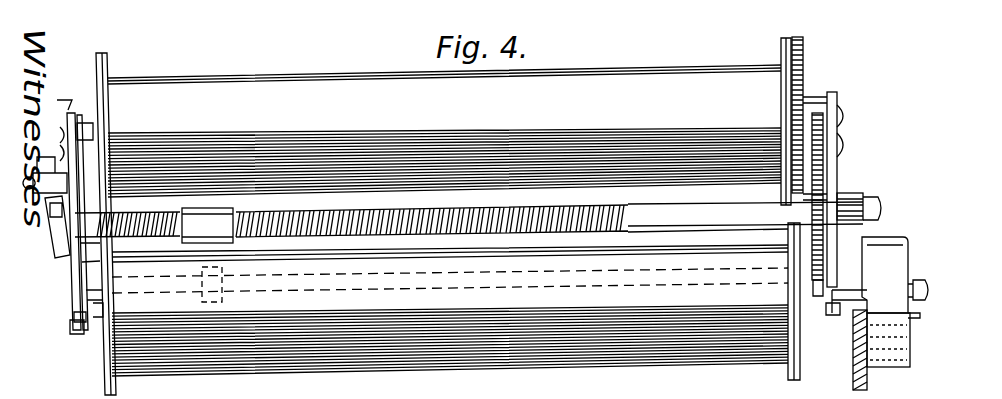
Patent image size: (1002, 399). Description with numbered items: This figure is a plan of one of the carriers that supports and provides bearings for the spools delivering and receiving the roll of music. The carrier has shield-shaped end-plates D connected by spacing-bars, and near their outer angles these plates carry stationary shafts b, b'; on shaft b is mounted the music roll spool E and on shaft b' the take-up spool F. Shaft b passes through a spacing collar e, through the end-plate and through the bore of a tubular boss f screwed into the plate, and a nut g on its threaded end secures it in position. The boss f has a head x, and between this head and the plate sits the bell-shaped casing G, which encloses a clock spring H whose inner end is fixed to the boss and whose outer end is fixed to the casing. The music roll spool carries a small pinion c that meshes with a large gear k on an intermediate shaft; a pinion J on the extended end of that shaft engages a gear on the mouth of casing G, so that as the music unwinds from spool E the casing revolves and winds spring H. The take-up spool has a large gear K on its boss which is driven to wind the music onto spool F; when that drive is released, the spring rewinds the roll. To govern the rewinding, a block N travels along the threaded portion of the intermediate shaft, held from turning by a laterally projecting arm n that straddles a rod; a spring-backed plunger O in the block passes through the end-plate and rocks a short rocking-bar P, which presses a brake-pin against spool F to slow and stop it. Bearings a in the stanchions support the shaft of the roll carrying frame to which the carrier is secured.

The take-up spool F is at (449, 121).
The music roll spool E is at (450, 310).
The end-plates D is at (100, 342).
The block N is at (233, 212).
The laterally projecting arm n is at (224, 300).
The large gear k is at (786, 252).
The gear K is at (802, 80).
The spacing collar e is at (847, 284).
The stationary shaft b' is at (844, 185).
The bearings a is at (845, 139).
The pinion J is at (847, 193).
The bell-shaped casing G is at (884, 238).
The stationary shaft b is at (495, 289).
The head x is at (916, 315).
The clock spring H is at (906, 356).
The pinion c is at (829, 315).
The tubular boss f is at (848, 316).
The rocking-bar P is at (40, 157).
The plunger O is at (100, 262).
The nut g is at (77, 328).